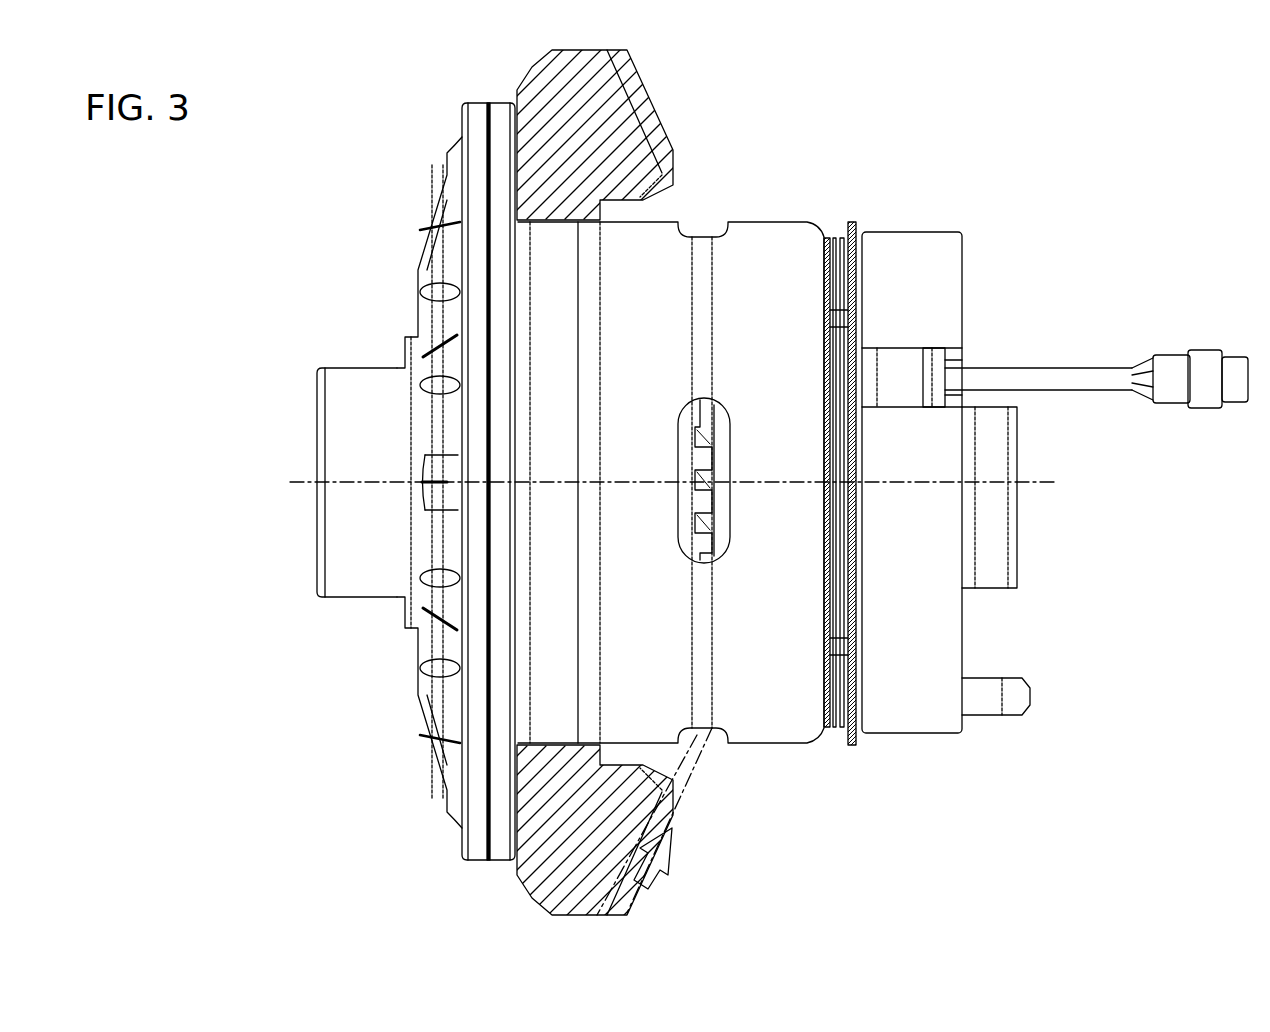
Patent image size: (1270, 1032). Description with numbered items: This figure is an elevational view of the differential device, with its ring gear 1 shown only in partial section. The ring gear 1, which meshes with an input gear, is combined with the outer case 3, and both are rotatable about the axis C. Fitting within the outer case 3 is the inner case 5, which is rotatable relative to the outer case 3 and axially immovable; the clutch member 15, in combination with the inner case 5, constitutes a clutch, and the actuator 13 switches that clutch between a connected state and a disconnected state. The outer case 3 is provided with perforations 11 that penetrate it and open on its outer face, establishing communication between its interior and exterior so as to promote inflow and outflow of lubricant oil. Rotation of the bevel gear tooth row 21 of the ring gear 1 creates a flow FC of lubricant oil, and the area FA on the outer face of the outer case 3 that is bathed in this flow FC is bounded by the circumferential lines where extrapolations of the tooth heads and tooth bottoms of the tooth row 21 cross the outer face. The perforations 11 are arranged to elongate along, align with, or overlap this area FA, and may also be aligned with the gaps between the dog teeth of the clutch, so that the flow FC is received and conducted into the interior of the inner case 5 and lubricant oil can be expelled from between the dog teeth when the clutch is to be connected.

The ring gear 1 is at (547, 50).
The bevel gear tooth row 21 is at (647, 117).
The outer case 3 is at (770, 222).
The perforations 11 is at (718, 232).
The actuator 13 is at (935, 222).
The inner case 5 is at (690, 407).
The clutch member 15 is at (735, 405).
The area bathed in the flow FA is at (704, 305).
The flow FC is at (672, 875).
The axis C is at (1043, 482).